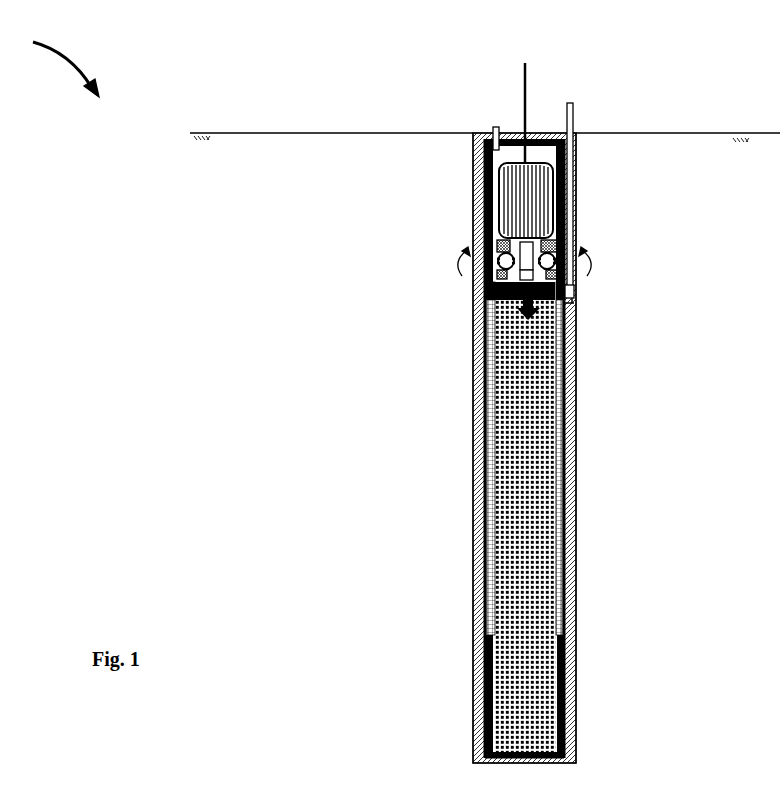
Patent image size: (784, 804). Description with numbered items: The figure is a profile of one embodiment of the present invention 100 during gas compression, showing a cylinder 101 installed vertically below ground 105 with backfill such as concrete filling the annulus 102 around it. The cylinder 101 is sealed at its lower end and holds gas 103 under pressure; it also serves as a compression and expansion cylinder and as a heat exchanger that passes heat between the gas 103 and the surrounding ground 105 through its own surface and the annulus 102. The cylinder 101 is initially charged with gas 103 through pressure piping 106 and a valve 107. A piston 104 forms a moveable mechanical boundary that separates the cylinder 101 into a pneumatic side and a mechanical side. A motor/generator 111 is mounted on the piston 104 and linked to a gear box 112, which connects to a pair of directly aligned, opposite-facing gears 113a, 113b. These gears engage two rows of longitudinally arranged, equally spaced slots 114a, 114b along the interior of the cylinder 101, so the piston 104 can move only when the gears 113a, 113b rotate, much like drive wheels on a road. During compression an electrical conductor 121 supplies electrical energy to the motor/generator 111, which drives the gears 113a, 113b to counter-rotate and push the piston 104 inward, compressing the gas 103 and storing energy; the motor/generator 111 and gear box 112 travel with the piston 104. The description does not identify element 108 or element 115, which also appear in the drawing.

The embodiment of the present invention 100 is at (95, 86).
The cylinder 101 is at (487, 662).
The annulus 102 is at (482, 717).
The gas 103 is at (520, 658).
The piston 104 is at (540, 301).
The ground 105 is at (345, 132).
The pressure piping 106 is at (574, 108).
The valve 107 is at (573, 297).
The inlet pipe 108 is at (493, 127).
The motor/generator 111 is at (487, 150).
The gear box 112 is at (527, 253).
The gear 113a is at (507, 262).
The gear 113b is at (549, 262).
The slots 114a is at (490, 456).
The slots 114b is at (560, 465).
The roller mount 115 is at (548, 243).
The electrical conductor 121 is at (530, 90).